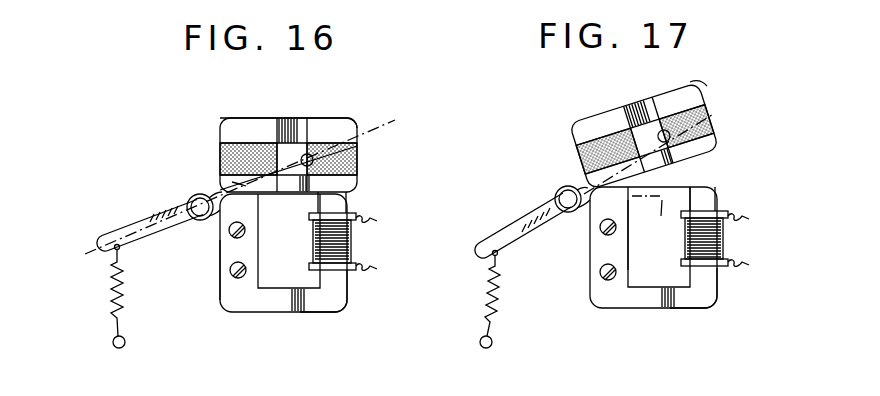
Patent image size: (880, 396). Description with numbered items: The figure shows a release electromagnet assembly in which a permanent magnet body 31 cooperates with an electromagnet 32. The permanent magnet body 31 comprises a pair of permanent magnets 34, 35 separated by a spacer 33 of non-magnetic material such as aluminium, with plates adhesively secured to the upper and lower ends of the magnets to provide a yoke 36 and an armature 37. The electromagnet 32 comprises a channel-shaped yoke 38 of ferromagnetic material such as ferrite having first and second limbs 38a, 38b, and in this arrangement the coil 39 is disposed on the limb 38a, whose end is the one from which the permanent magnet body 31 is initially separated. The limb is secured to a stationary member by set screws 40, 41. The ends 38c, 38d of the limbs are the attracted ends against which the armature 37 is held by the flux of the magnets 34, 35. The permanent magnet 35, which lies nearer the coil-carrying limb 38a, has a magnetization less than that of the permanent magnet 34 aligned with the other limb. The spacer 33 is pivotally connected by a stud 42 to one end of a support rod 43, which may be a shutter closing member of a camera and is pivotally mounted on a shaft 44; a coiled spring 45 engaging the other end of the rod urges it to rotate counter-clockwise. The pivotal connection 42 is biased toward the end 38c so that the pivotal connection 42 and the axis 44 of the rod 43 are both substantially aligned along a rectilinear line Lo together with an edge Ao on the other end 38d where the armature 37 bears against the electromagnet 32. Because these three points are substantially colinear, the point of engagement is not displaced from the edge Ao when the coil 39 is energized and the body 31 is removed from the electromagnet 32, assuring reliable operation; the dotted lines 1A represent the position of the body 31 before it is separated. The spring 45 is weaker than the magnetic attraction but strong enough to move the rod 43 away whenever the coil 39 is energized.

In FIG. 16, the permanent magnet body 31 is at (328, 103).
In FIG. 17, the permanent magnet body 31 is at (708, 90).
In FIG. 16, the electromagnet 32 is at (317, 318).
In FIG. 17, the electromagnet 32 is at (707, 315).
In FIG. 16, the spacer 33 is at (290, 135).
In FIG. 16, the permanent magnet 34 is at (221, 152).
In FIG. 16, the permanent magnet 35 is at (358, 166).
In FIG. 16, the yoke 36 is at (350, 122).
In FIG. 16, the armature 37 is at (312, 193).
In FIG. 16, the yoke 38 is at (264, 312).
In FIG. 17, the yoke 38 is at (650, 309).
In FIG. 16, the first limb 38a is at (350, 275).
In FIG. 17, the first limb 38a is at (718, 275).
In FIG. 16, the second limb 38b is at (223, 283).
In FIG. 17, the second limb 38b is at (625, 245).
In FIG. 16, the attracted end 38c is at (348, 192).
In FIG. 17, the attracted end 38c is at (716, 188).
In FIG. 16, the attracted end 38d is at (260, 212).
In FIG. 17, the attracted end 38d is at (660, 193).
In FIG. 16, the coil 39 is at (353, 245).
In FIG. 17, the coil 39 is at (725, 243).
In FIG. 16, the set screw 40 is at (245, 234).
In FIG. 17, the set screw 40 is at (600, 230).
In FIG. 16, the set screw 41 is at (229, 270).
In FIG. 17, the set screw 41 is at (600, 272).
In FIG. 16, the stud 42 is at (309, 154).
In FIG. 16, the support rod 43 is at (172, 210).
In FIG. 17, the support rod 43 is at (513, 228).
In FIG. 16, the shaft 44 is at (205, 219).
In FIG. 17, the shaft 44 is at (555, 191).
In FIG. 16, the coiled spring 45 is at (113, 290).
In FIG. 17, the coiled spring 45 is at (498, 300).
In FIG. 16, the edge Ao is at (228, 178).
In FIG. 17, the edge Ao is at (670, 194).
In FIG. 16, the rectilinear line Lo is at (98, 250).
In FIG. 17, the dotted lines 1A is at (661, 219).